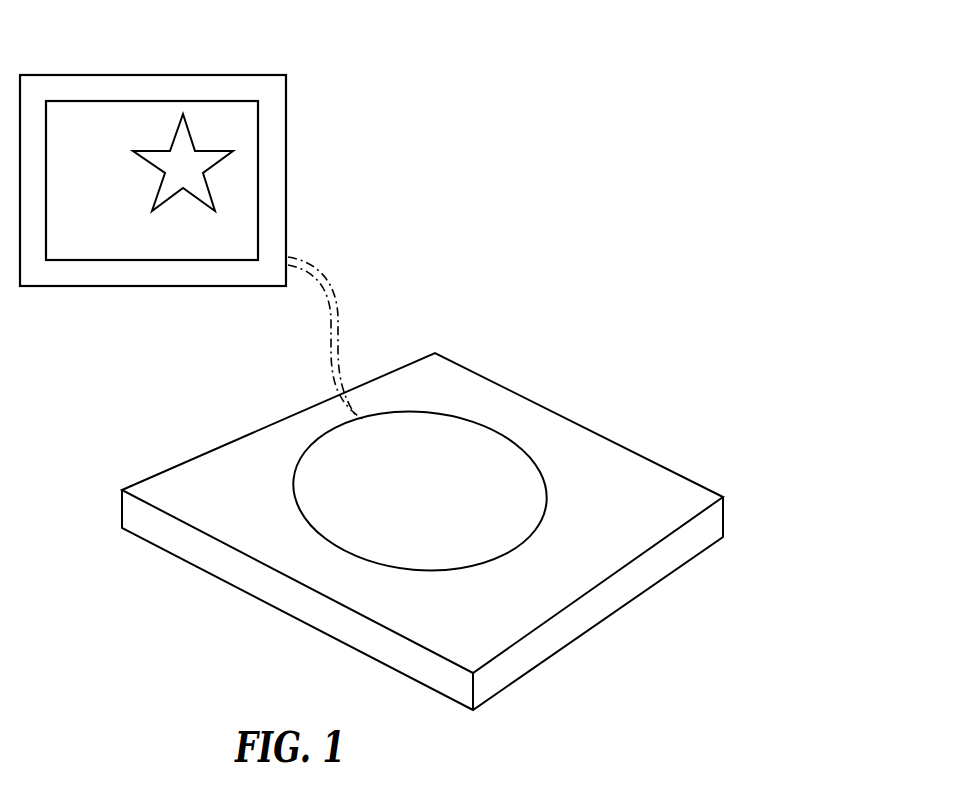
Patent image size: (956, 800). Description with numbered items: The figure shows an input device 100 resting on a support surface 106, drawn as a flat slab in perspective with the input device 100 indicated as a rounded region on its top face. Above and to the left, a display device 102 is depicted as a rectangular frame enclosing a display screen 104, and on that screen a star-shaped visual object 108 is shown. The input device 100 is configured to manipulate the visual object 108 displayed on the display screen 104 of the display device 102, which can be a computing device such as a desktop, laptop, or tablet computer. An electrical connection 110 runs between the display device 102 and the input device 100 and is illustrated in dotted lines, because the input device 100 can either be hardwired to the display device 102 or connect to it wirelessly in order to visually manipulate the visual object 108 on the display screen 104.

The input device 100 is at (525, 502).
The display device 102 is at (286, 180).
The display screen 104 is at (98, 120).
The support surface 106 is at (485, 390).
The visual object 108 is at (192, 132).
The electrical connection 110 is at (330, 277).